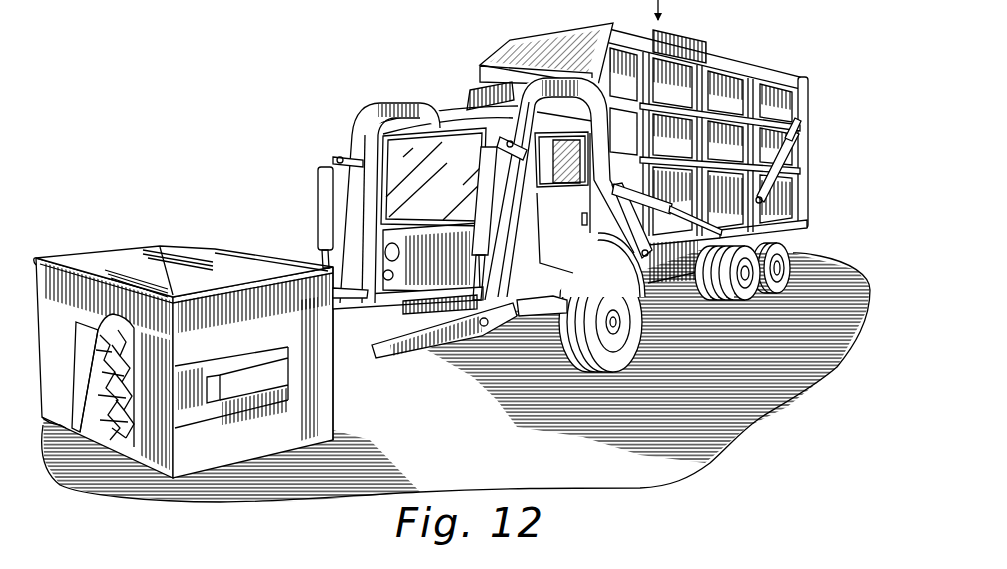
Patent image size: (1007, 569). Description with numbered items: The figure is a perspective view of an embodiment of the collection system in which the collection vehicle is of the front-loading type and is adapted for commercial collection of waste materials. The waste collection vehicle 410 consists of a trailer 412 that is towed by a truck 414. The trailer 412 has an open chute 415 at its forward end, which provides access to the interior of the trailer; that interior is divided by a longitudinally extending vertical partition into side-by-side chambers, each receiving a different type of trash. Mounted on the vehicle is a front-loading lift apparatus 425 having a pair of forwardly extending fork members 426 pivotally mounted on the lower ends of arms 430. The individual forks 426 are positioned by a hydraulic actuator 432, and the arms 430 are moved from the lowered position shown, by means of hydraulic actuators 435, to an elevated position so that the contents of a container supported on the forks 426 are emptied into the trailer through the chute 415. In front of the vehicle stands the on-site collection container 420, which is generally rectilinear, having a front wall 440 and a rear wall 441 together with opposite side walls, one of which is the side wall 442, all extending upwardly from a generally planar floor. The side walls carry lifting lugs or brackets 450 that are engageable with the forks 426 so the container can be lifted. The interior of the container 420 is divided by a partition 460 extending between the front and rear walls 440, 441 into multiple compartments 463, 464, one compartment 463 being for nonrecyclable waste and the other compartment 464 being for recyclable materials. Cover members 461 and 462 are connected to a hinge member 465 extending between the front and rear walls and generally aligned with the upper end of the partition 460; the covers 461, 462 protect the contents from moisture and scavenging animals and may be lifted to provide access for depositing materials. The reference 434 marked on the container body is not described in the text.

The waste collection vehicle 410 is at (567, 196).
The trailer 412 is at (803, 92).
The truck 414 is at (548, 233).
The open chute 415 is at (635, 33).
The on-site collection container 420 is at (218, 348).
The lift apparatus 425 is at (418, 100).
The fork members 426 is at (390, 353).
The arms 430 is at (570, 93).
The hydraulic actuator 432 is at (320, 173).
The container body 434 is at (312, 325).
The hydraulic actuators 435 is at (707, 213).
The front wall 440 is at (64, 418).
The rear wall 441 is at (363, 382).
The side wall 442 is at (35, 260).
The lifting lugs or brackets 450 is at (234, 395).
The partition 460 is at (110, 315).
The cover member 461 is at (124, 256).
The cover member 462 is at (264, 254).
The compartment 463 is at (150, 411).
The compartment 464 is at (77, 373).
The hinge member 465 is at (190, 253).